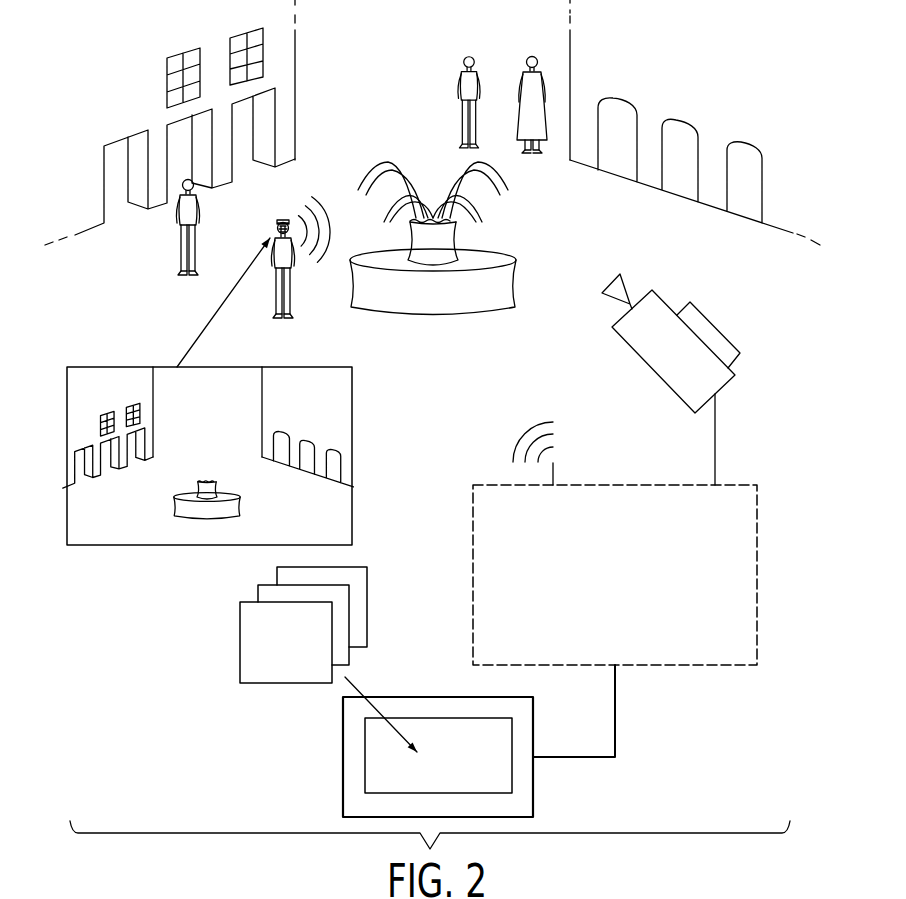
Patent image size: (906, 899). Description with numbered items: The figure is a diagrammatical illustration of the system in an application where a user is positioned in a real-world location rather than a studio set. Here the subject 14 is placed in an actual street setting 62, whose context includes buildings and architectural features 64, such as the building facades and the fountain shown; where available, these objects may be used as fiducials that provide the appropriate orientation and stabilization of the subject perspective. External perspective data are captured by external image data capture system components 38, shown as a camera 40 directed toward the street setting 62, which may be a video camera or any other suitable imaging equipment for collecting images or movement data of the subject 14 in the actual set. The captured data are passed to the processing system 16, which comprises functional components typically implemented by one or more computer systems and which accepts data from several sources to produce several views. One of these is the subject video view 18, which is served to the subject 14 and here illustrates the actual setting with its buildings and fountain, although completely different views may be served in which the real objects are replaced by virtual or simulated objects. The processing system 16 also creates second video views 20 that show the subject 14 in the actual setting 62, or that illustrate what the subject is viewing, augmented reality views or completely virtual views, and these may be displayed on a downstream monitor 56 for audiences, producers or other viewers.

The subject 14 is at (274, 296).
The processing system 16 is at (757, 575).
The subject video view 18 is at (352, 457).
The second video views 20 is at (240, 642).
The external image data capture system components 38 is at (652, 372).
The camera 40 is at (715, 328).
The monitor 56 is at (533, 733).
The actual street setting 62 is at (397, 112).
The buildings and architectural features 64 is at (112, 111).